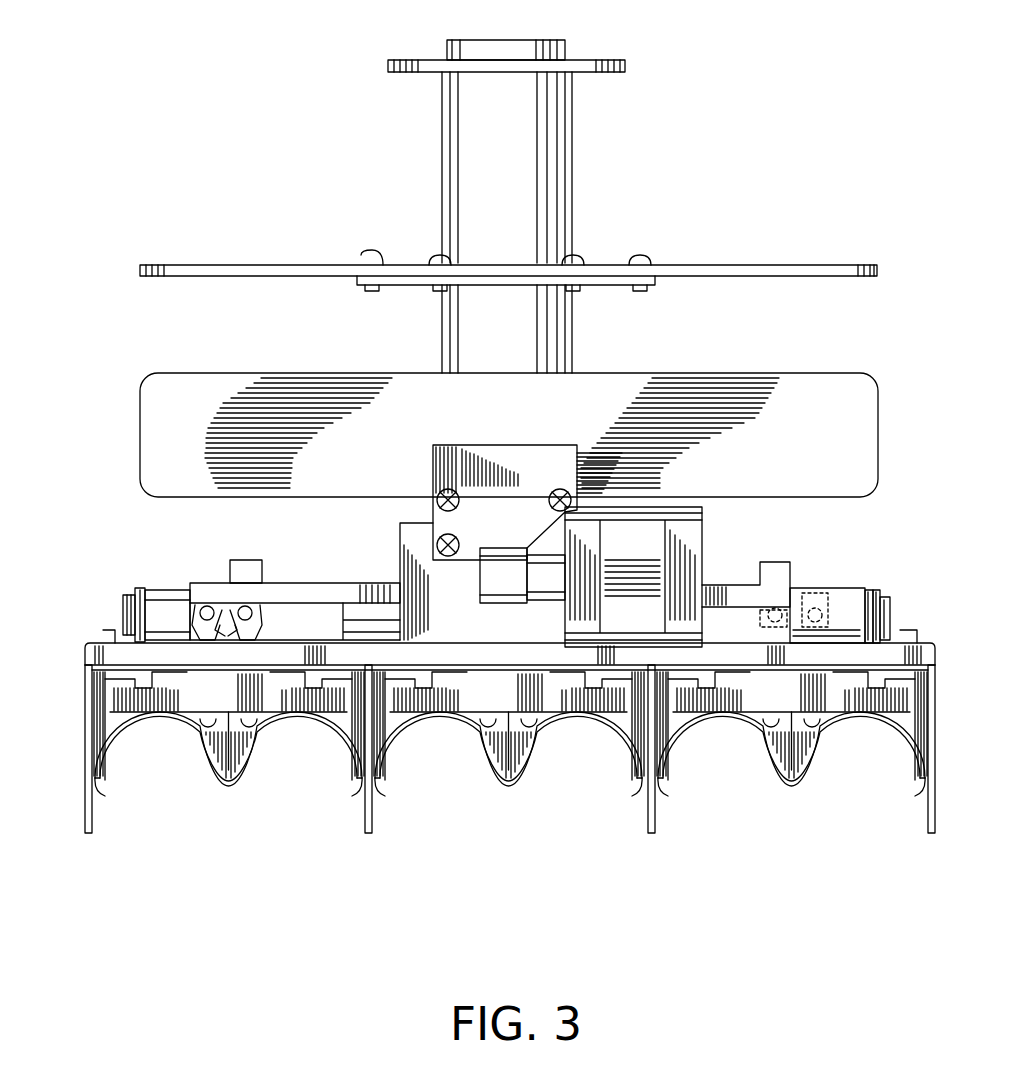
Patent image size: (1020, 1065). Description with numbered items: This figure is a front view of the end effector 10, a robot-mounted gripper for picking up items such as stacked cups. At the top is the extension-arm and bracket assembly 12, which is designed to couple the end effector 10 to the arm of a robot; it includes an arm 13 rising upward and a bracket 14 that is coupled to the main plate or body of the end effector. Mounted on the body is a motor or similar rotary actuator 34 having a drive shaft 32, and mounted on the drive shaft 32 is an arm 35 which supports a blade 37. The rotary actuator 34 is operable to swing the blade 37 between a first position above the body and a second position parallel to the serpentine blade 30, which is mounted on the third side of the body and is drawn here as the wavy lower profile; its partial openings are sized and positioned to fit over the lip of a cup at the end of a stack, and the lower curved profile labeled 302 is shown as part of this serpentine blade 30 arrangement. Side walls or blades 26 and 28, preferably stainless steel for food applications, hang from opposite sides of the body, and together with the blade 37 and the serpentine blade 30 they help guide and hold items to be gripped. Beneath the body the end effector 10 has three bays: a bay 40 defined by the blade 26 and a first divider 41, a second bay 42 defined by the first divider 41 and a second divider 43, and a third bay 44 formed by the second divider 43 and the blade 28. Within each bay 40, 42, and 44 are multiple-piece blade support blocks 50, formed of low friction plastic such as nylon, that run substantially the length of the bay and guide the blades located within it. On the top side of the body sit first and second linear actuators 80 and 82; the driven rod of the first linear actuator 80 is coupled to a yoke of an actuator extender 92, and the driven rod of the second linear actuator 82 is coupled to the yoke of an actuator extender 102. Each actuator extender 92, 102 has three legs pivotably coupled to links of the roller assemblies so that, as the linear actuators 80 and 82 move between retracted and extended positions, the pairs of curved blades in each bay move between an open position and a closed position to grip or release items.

The end effector 10 is at (288, 150).
The extension-arm and bracket assembly 12 is at (627, 229).
The arm 13 is at (527, 160).
The bracket 14 is at (413, 536).
The side wall or blade 26 is at (934, 822).
The side wall or blade 28 is at (84, 795).
The serpentine blade 30 is at (512, 773).
The drive shaft 32 is at (543, 572).
The motor or rotary actuator 34 is at (690, 536).
The arm 35 is at (503, 565).
The blade 37 is at (522, 430).
The bay 40 is at (722, 798).
The first divider 41 is at (650, 820).
The second bay 42 is at (465, 803).
The second divider 43 is at (365, 822).
The third bay 44 is at (178, 818).
The blade support block 50 is at (225, 701).
The first linear actuator 80 is at (165, 605).
The second linear actuator 82 is at (848, 610).
The actuator extender 92 is at (815, 585).
The actuator extender 102 is at (290, 588).
The arched fin 302 is at (280, 748).